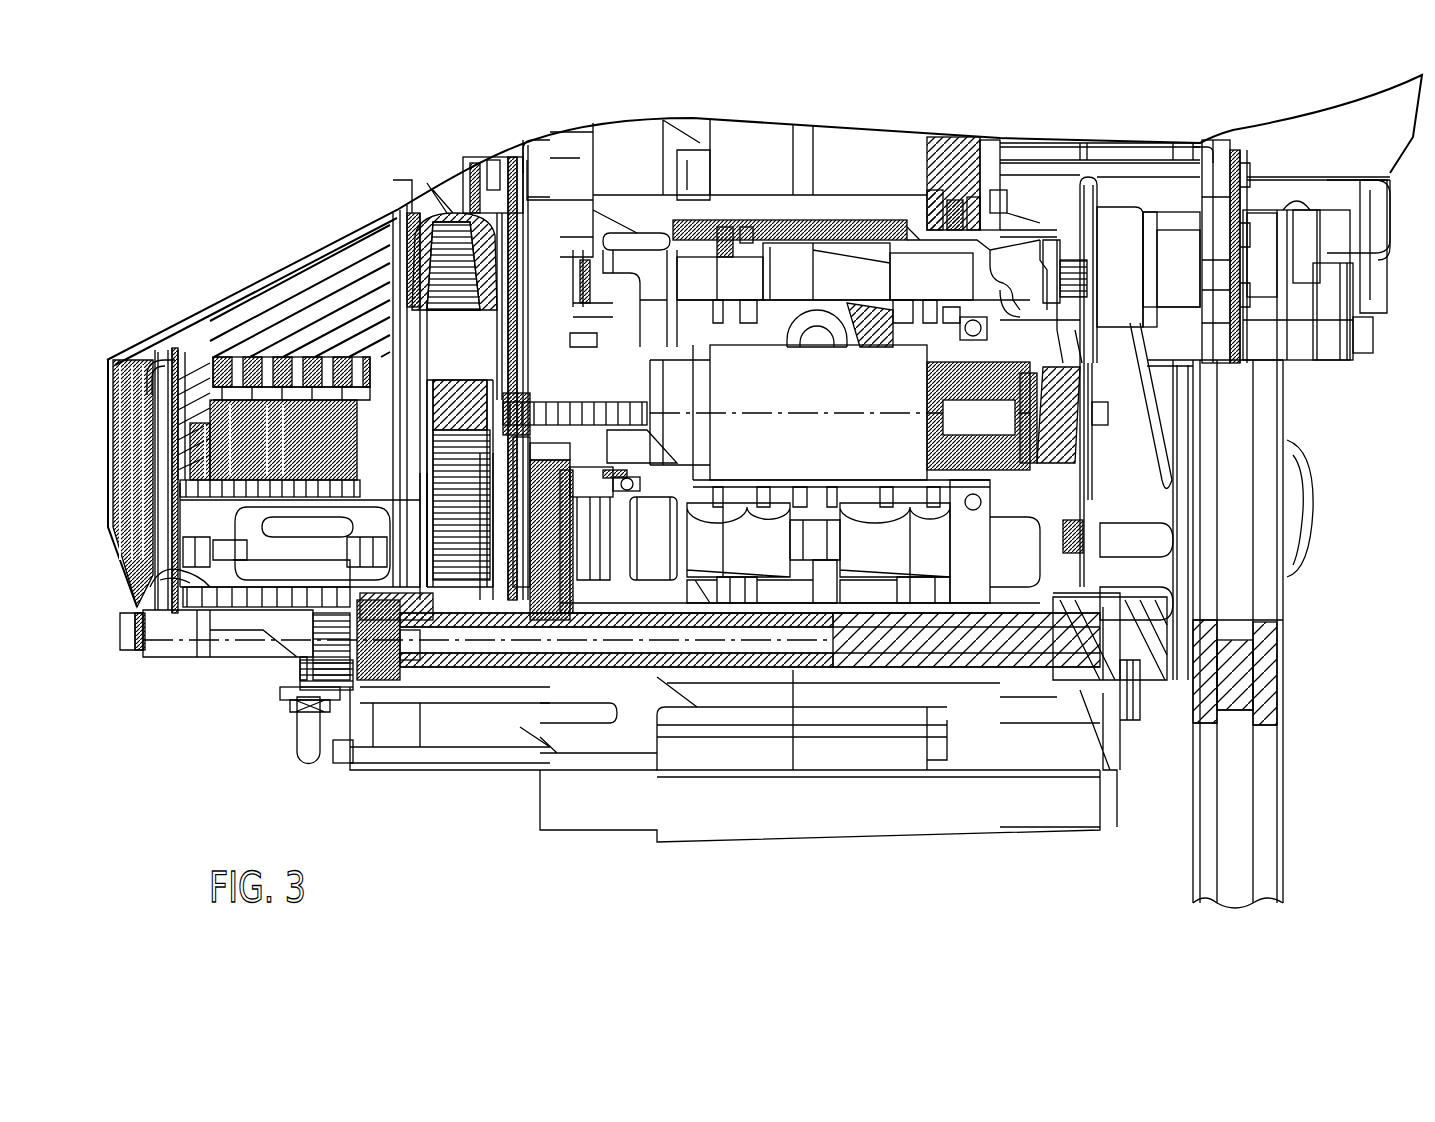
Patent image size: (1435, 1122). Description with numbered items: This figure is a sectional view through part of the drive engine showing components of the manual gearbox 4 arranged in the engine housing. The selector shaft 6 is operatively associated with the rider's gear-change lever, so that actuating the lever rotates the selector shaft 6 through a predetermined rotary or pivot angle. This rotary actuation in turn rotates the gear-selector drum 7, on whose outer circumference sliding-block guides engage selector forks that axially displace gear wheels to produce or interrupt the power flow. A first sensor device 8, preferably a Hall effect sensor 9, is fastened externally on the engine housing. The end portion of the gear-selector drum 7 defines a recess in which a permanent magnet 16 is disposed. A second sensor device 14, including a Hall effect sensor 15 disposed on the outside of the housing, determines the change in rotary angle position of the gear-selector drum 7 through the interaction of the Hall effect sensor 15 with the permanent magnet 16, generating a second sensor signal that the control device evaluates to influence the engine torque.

The manual gearbox 4 is at (790, 111).
The selector shaft 6 is at (953, 660).
The gear-selector drum 7 is at (740, 383).
The first sensor device 8 is at (292, 668).
The Hall effect sensor 9 is at (335, 765).
The second sensor device 14 is at (1113, 425).
The Hall effect sensor 15 is at (1063, 393).
The permanent magnet 16 is at (1030, 437).